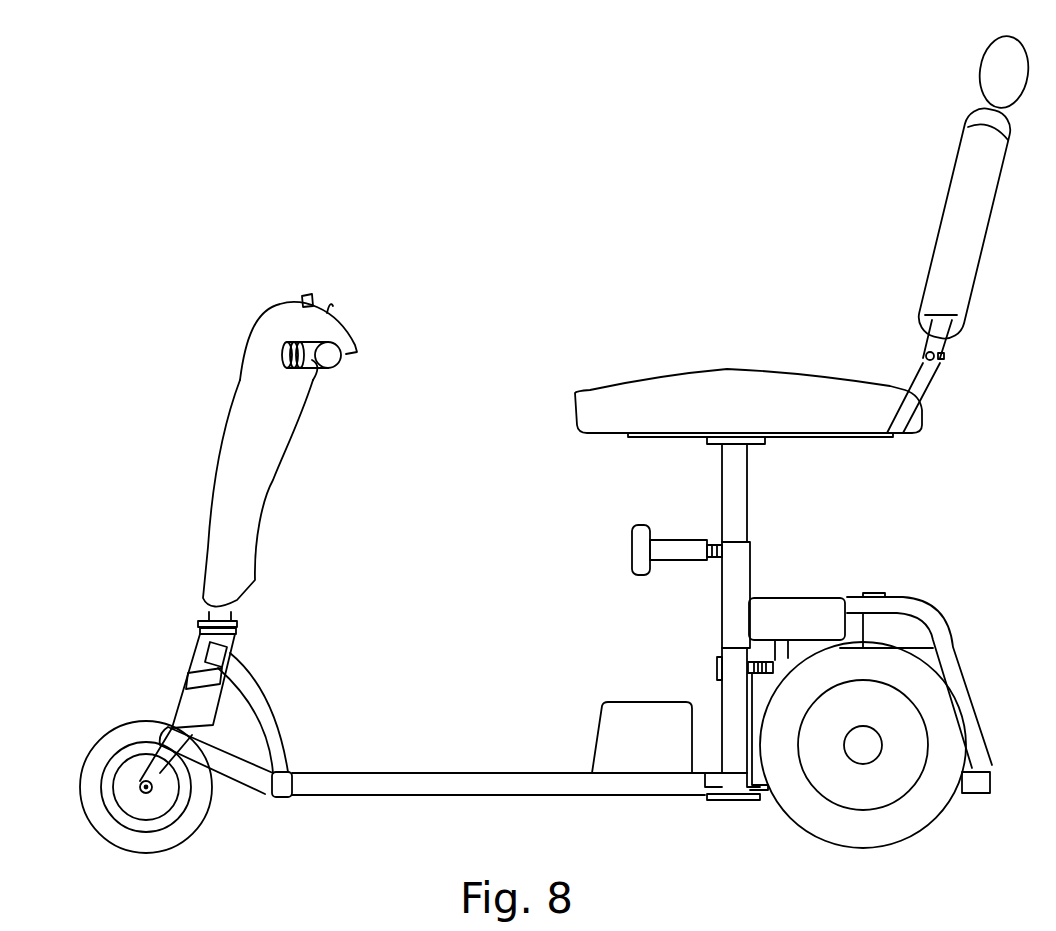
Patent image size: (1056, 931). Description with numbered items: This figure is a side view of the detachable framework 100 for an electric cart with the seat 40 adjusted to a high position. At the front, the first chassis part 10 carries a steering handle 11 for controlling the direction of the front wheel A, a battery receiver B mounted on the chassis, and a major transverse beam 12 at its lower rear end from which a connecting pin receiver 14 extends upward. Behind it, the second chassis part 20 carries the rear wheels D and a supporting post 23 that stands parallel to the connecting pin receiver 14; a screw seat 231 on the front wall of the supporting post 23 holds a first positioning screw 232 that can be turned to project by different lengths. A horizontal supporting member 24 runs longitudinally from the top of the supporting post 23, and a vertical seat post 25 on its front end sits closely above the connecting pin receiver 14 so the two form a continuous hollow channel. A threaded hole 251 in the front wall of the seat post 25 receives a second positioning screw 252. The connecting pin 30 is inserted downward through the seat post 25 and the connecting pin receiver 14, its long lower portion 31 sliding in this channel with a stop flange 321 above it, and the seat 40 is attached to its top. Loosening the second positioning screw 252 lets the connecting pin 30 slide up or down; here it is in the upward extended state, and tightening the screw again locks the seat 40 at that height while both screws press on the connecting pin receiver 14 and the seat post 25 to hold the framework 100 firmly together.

The detachable framework 100 is at (512, 277).
The first chassis part 10 is at (430, 780).
The steering handle 11 is at (253, 470).
The major transverse beam 12 is at (705, 790).
The connecting pin receiver 14 is at (722, 690).
The second chassis part 20 is at (978, 786).
The supporting post 23 is at (930, 653).
The horizontal supporting member 24 is at (810, 615).
The seat post 25 is at (737, 570).
The threaded hole 251 is at (720, 560).
The second positioning screw 252 is at (650, 550).
The screw seat 231 is at (787, 660).
The first positioning screw 232 is at (760, 673).
The connecting pin 30 is at (700, 480).
The long lower portion 31 is at (737, 500).
The stop flange 321 is at (755, 445).
The seat 40 is at (727, 383).
The front wheel A is at (115, 740).
The battery receiver B is at (605, 716).
The rear wheels D is at (925, 817).